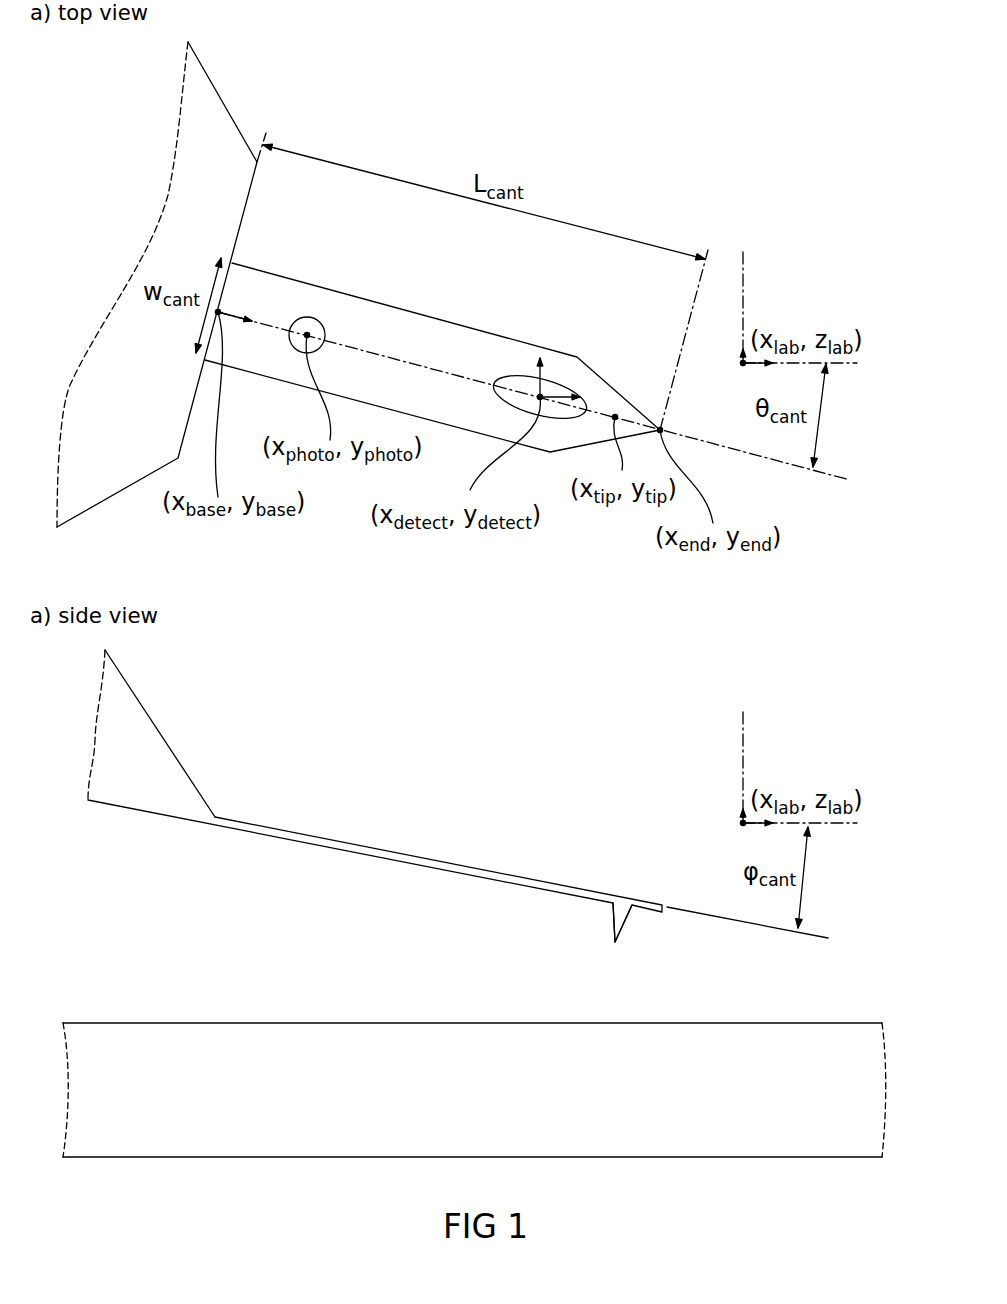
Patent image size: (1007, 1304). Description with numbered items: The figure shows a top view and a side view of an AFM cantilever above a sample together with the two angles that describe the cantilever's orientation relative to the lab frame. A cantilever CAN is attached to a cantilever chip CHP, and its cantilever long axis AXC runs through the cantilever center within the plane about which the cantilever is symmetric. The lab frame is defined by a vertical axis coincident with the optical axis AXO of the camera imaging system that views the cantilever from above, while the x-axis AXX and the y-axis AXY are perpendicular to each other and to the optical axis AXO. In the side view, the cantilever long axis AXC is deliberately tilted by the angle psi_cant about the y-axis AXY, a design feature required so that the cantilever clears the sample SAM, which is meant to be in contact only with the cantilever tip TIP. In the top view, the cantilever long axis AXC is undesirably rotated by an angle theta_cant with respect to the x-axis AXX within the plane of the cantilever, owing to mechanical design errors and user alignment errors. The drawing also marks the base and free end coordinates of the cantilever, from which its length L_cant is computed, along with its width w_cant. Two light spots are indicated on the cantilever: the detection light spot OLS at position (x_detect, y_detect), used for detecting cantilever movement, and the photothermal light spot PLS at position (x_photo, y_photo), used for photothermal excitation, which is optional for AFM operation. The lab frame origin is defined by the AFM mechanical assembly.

The cantilever chip CHP is at (179, 284).
The cantilever CAN is at (438, 317).
The photothermal light spot PLS is at (313, 317).
The detection light spot OLS is at (570, 383).
The cantilever tip TIP is at (615, 942).
The sample SAM is at (474, 1090).
The y-axis AXY is at (745, 270).
The x-axis AXX is at (837, 365).
The cantilever long axis AXC is at (840, 478).
The optical axis AXO is at (745, 730).